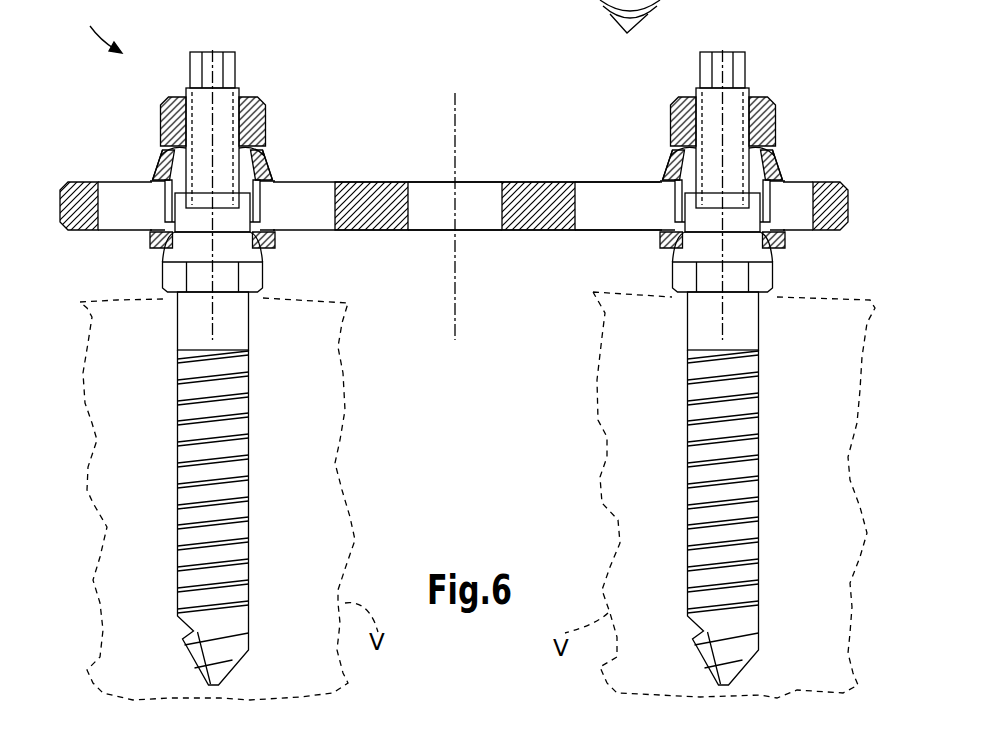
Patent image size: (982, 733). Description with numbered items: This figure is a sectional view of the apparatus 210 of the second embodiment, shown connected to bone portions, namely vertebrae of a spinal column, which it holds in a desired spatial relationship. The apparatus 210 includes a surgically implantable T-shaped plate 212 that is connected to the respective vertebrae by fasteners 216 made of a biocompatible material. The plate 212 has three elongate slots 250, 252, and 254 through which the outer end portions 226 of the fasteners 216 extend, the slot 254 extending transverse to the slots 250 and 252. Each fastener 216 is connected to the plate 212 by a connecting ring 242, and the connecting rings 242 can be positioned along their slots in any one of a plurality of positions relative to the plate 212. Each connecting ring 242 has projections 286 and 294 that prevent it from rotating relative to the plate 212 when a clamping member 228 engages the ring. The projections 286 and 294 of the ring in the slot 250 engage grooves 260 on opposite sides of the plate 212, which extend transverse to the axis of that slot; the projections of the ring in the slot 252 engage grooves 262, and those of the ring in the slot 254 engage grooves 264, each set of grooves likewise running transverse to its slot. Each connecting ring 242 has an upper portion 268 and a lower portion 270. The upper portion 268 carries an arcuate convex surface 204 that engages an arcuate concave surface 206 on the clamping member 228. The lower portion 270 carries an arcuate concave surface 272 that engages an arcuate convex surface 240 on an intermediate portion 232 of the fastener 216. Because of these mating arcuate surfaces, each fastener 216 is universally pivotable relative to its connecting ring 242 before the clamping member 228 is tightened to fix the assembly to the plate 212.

The apparatus 210 is at (95, 27).
The arcuate convex surface 204 is at (157, 160).
The arcuate concave surface 206 is at (276, 165).
The T-shaped plate 212 is at (557, 195).
The fastener 216 is at (220, 500).
The outer end portion 226 is at (210, 62).
The clamping member 228 is at (175, 100).
The intermediate portion 232 is at (177, 294).
The arcuate convex surface 240 is at (165, 262).
The connecting ring 242 is at (144, 159).
The elongate slot 250 is at (640, 198).
The elongate slot 252 is at (317, 197).
The elongate slot 254 is at (430, 205).
The grooves 260 is at (173, 163).
The grooves 262 is at (98, 183).
The grooves 264 is at (492, 182).
The upper portion 268 is at (272, 178).
The lower portion 270 is at (152, 240).
The arcuate concave surface 272 is at (238, 268).
The projection 286 is at (287, 185).
The projection 294 is at (266, 222).